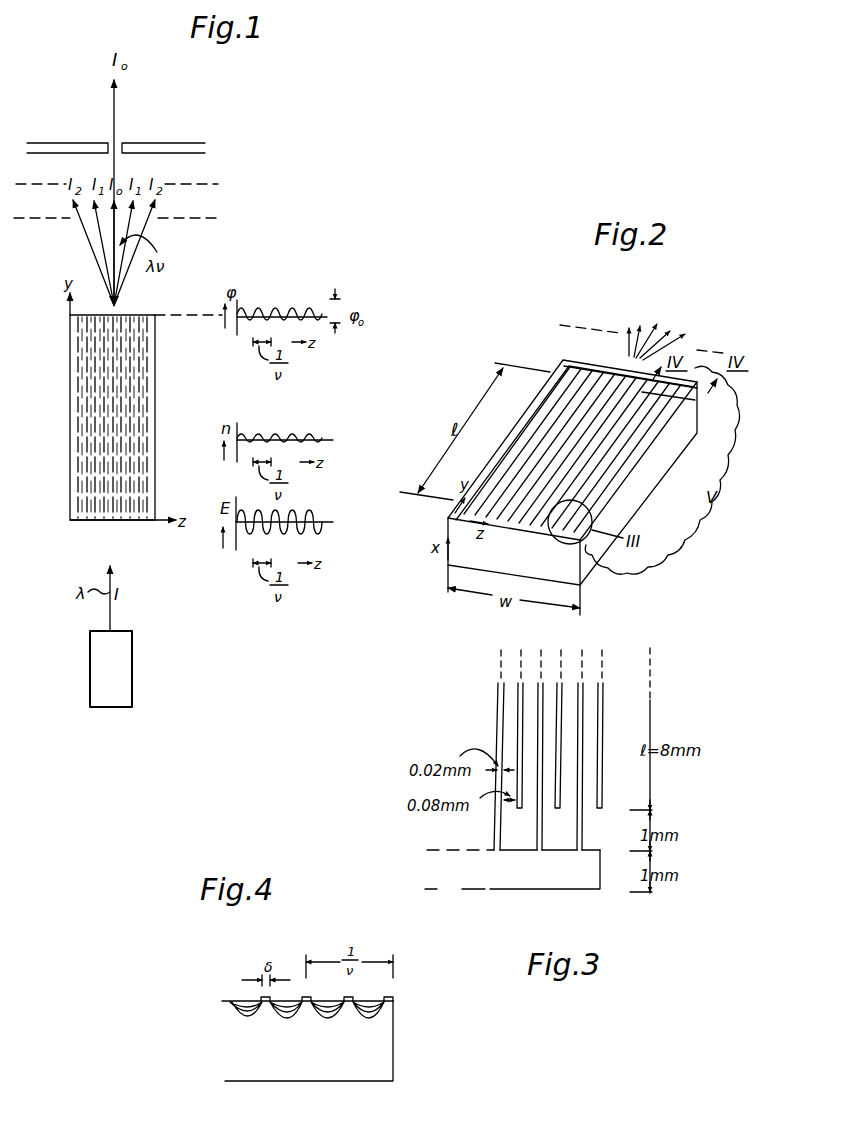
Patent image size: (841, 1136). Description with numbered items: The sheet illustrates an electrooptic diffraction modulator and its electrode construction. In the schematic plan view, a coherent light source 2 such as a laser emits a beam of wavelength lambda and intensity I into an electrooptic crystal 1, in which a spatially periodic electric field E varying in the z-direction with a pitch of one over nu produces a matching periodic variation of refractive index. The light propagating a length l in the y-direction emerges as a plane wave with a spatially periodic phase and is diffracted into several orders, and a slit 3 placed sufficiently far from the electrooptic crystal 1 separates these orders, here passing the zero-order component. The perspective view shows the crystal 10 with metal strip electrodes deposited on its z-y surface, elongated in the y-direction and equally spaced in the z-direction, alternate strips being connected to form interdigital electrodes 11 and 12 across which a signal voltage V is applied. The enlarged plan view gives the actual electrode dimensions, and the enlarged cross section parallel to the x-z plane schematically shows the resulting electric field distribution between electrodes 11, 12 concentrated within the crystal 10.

In FIG. 1, the electrooptic crystal 1 is at (70, 445).
In FIG. 2, the electrooptic crystal 1 is at (573, 482).
In FIG. 1, the coherent light source 2 is at (90, 672).
In FIG. 1, the slit 3 is at (118, 148).
In FIG. 2, the crystal 10 is at (588, 567).
In FIG. 3, the crystal 10 is at (512, 869).
In FIG. 4, the crystal 10 is at (393, 1046).
In FIG. 2, the interdigital electrode 11 is at (648, 437).
In FIG. 3, the interdigital electrode 11 is at (604, 692).
In FIG. 4, the interdigital electrode 11 is at (393, 999).
In FIG. 2, the interdigital electrode 12 is at (632, 447).
In FIG. 3, the interdigital electrode 12 is at (583, 727).
In FIG. 4, the interdigital electrode 12 is at (352, 997).